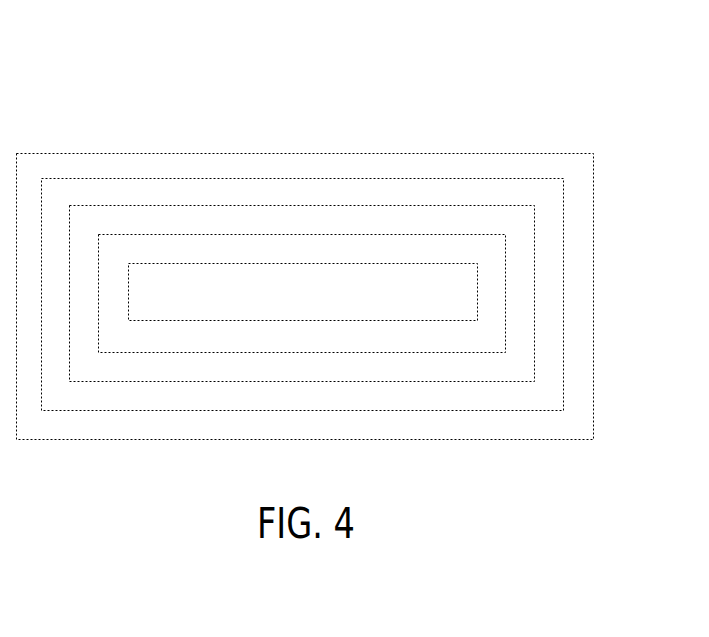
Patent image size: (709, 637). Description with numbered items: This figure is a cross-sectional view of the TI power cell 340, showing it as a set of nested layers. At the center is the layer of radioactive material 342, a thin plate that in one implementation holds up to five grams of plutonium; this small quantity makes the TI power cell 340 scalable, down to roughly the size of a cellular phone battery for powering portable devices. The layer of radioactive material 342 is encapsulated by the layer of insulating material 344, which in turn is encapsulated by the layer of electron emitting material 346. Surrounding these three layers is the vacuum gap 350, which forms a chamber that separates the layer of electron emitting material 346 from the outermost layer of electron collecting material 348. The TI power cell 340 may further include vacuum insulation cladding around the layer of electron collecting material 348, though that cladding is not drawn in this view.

The TI power cell 340 is at (597, 88).
The layer of radioactive material 342 is at (317, 302).
The layer of insulating material 344 is at (317, 348).
The layer of electron emitting material 346 is at (317, 378).
The vacuum gap 350 is at (317, 406).
The layer of electron collecting material 348 is at (317, 436).